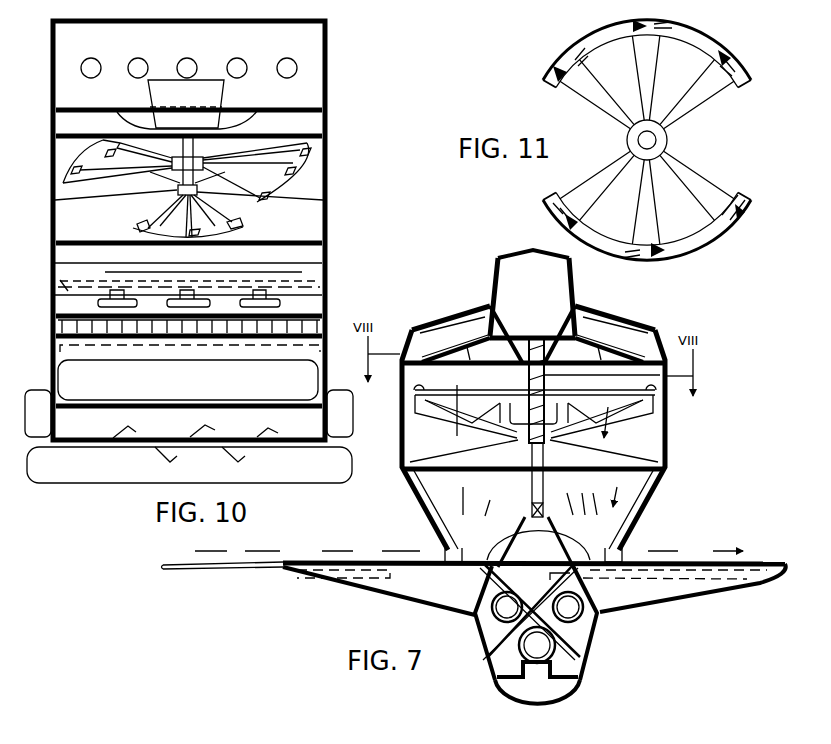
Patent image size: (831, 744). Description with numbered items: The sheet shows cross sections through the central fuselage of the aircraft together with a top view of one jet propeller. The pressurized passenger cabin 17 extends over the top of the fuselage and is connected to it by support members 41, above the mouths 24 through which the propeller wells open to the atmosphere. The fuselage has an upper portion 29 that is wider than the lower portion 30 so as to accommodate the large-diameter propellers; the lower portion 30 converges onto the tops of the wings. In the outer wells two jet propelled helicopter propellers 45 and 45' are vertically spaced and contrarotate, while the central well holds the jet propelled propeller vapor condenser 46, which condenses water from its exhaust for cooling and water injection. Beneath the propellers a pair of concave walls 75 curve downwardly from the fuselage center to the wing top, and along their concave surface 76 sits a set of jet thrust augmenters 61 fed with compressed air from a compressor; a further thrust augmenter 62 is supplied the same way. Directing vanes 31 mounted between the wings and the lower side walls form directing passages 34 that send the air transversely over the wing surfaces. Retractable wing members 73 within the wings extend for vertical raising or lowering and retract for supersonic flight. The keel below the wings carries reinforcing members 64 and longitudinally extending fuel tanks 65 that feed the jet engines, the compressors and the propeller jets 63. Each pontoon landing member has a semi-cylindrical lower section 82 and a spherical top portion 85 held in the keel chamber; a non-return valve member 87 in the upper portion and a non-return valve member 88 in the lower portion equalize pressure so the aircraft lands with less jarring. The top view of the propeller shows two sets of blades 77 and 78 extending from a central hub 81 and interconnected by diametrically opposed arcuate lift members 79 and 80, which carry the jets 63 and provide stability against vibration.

In FIG. 10, the pressurized passenger cabin 17 is at (329, 60).
In FIG. 7, the pressurized passenger cabin 17 is at (577, 280).
In FIG. 10, the mouths 24 is at (240, 118).
In FIG. 7, the mouths 24 is at (438, 350).
In FIG. 7, the upper portion 29 is at (665, 445).
In FIG. 7, the lower portion 30 is at (655, 488).
In FIG. 10, the directing vanes 31 is at (240, 333).
In FIG. 10, the directing passages 34 is at (308, 327).
In FIG. 10, the support members 41 is at (198, 92).
In FIG. 7, the support members 41 is at (460, 333).
In FIG. 10, the jet propelled helicopter propeller 45 is at (211, 169).
In FIG. 11, the jet propelled helicopter propeller 45 is at (574, 25).
In FIG. 10, the jet propelled helicopter propeller 45' is at (213, 216).
In FIG. 7, the jet propelled propeller vapor condenser 46 is at (647, 403).
In FIG. 10, the jet thrust augmenters 61 is at (278, 300).
In FIG. 7, the thrust augmenter 62 is at (600, 545).
In FIG. 10, the jets 63 is at (315, 150).
In FIG. 11, the jets 63 is at (558, 68).
In FIG. 7, the jets 63 is at (428, 743).
In FIG. 7, the reinforcing members 64 is at (495, 658).
In FIG. 10, the fuel tanks 65 is at (298, 378).
In FIG. 7, the fuel tanks 65 is at (500, 612).
In FIG. 7, the retractable wing members 73 is at (752, 562).
In FIG. 10, the concave walls 75 is at (308, 257).
In FIG. 7, the concave walls 75 is at (484, 568).
In FIG. 10, the concave surface 76 is at (68, 291).
In FIG. 7, the concave surface 76 is at (472, 560).
In FIG. 11, the blades 77 is at (658, 58).
In FIG. 11, the blades 78 is at (600, 182).
In FIG. 11, the arcuate lift member 79 is at (705, 40).
In FIG. 11, the arcuate lift member 80 is at (700, 250).
In FIG. 11, the central hub 81 is at (665, 140).
In FIG. 10, the semi-cylindrical lower section 82 is at (312, 480).
In FIG. 7, the semi-cylindrical lower section 82 is at (552, 706).
In FIG. 10, the spherical top portion 85 is at (340, 420).
In FIG. 7, the spherical top portion 85 is at (560, 665).
In FIG. 10, the non-return valve member 87 is at (225, 426).
In FIG. 10, the non-return valve member 88 is at (224, 465).